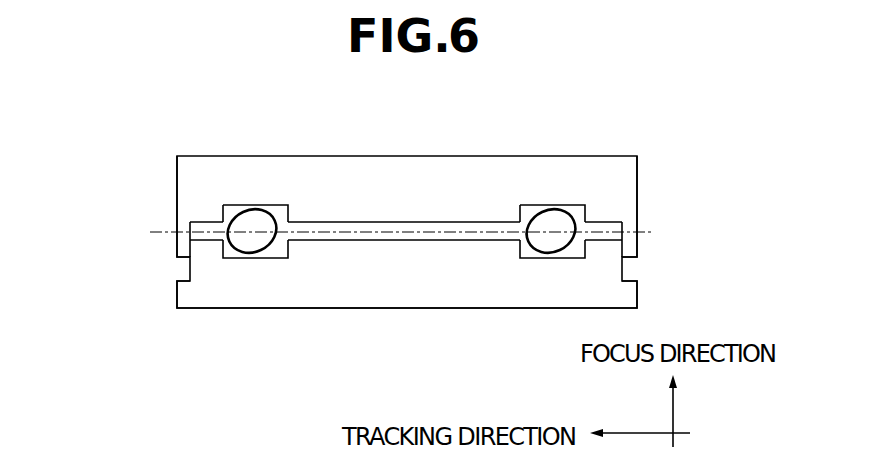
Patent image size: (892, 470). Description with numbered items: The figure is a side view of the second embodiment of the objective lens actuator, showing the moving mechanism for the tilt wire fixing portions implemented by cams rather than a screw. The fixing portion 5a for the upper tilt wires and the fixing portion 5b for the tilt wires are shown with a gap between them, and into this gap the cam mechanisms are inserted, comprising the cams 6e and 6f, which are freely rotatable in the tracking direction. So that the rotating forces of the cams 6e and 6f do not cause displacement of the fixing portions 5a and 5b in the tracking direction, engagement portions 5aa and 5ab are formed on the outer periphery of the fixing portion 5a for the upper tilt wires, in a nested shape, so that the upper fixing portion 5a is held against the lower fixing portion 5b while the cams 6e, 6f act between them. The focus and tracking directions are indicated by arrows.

The fixing portion for the upper tilt wires 5a is at (618, 168).
The engagement portion 5aa is at (178, 232).
The engagement portion 5ab is at (636, 233).
The fixing portion for the tilt wires 5b is at (630, 292).
The cam 6e is at (257, 218).
The cam 6f is at (552, 218).